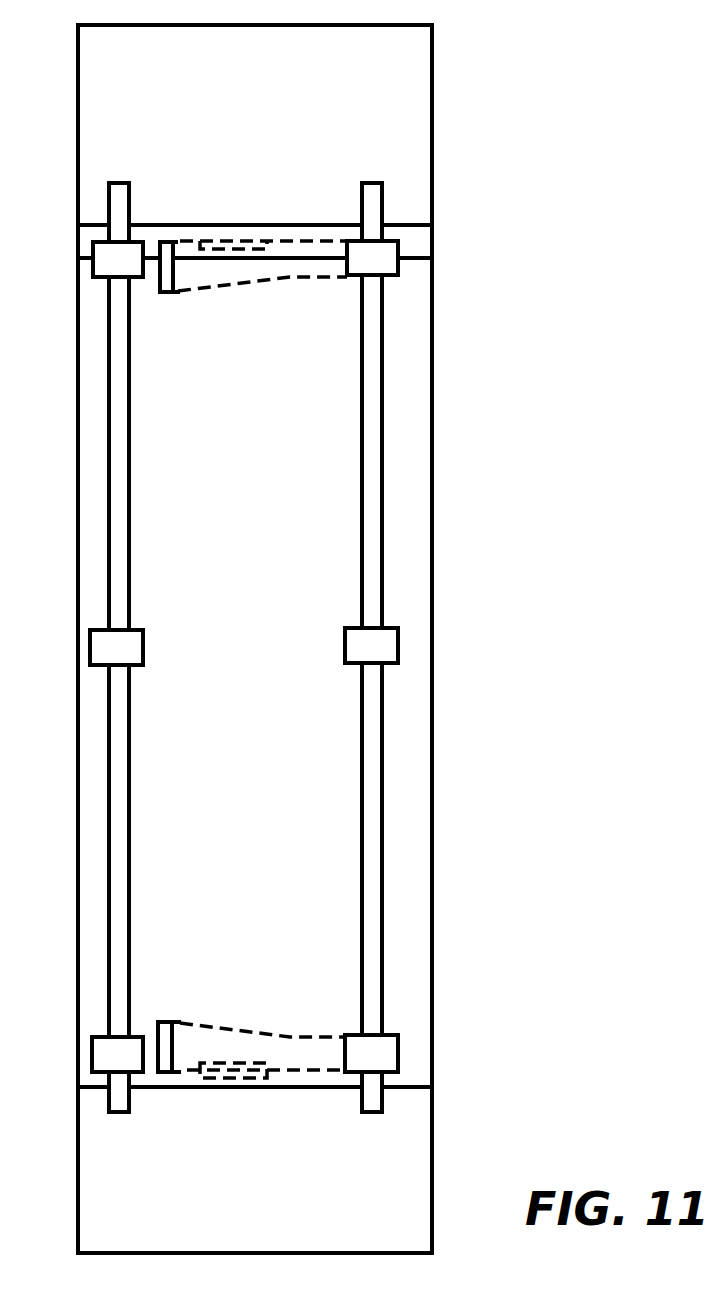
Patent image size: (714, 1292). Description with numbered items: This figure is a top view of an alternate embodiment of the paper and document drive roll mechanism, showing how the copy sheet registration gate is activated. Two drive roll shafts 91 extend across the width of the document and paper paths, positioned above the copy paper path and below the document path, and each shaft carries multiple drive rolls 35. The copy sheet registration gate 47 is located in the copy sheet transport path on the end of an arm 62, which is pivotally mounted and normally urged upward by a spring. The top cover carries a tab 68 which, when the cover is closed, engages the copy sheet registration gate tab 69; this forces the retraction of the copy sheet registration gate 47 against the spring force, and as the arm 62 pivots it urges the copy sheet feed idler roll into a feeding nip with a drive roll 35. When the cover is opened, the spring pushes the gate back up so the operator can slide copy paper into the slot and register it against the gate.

The drive roll 35 is at (93, 277).
The copy sheet registration gate 47 is at (163, 293).
The arm 62 is at (303, 268).
The tab 68 is at (240, 242).
The copy sheet registration gate tab 69 is at (212, 250).
The drive roll shaft 91 is at (129, 488).